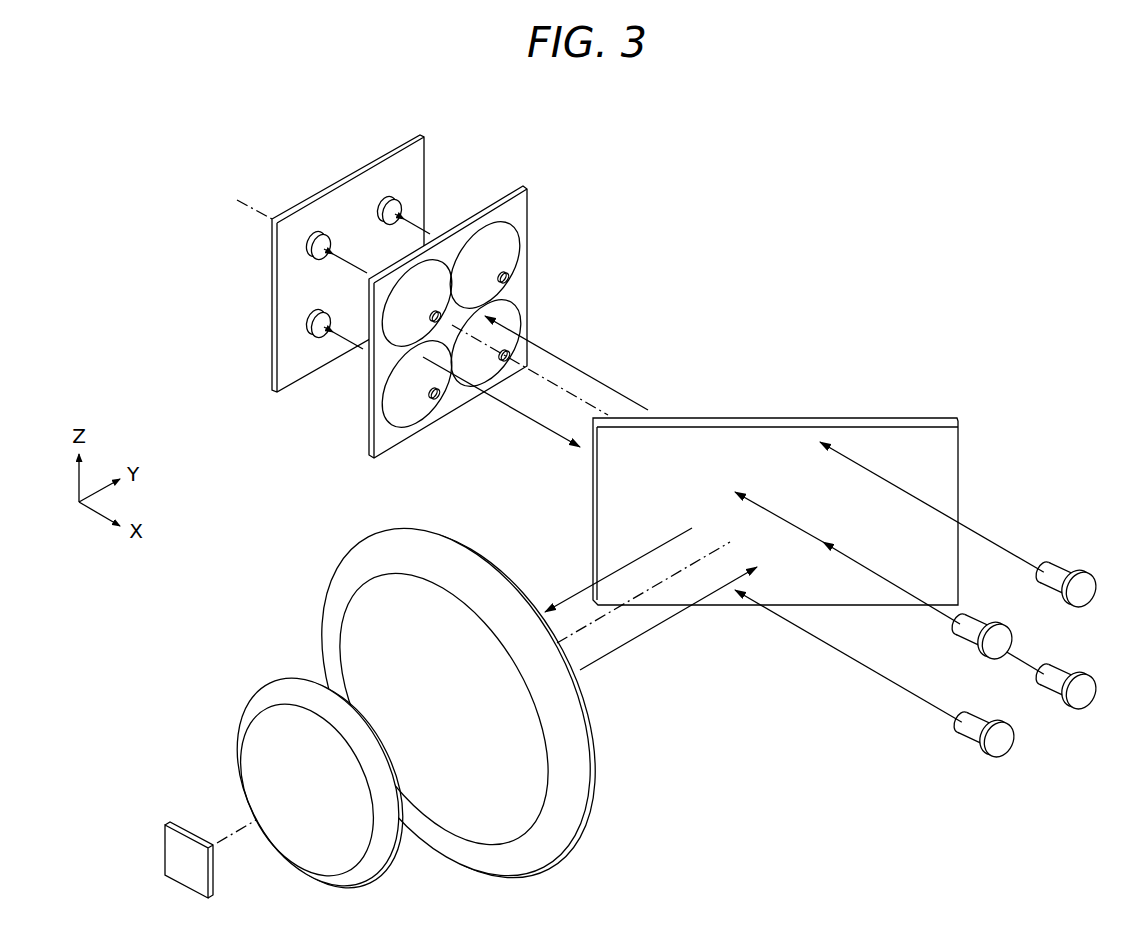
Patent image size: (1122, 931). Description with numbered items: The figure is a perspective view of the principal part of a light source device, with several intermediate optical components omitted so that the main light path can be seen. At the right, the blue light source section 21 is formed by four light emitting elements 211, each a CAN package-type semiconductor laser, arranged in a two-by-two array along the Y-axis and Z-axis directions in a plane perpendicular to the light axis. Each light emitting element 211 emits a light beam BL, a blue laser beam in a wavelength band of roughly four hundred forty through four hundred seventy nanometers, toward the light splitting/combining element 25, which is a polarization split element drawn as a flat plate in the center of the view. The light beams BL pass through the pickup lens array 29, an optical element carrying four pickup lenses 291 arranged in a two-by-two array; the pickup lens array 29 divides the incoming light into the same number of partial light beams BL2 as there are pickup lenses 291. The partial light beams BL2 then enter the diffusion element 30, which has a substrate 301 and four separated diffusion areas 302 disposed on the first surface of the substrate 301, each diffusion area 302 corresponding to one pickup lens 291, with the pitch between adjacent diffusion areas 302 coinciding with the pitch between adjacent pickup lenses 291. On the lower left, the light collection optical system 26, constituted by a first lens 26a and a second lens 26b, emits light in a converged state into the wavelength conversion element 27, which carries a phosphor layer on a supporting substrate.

The blue light source section 21 is at (918, 633).
The light emitting element 211 is at (1058, 685).
The light splitting/combining element 25 is at (904, 440).
The light collection optical system 26 is at (392, 703).
The first lens 26a is at (332, 638).
The second lens 26b is at (309, 782).
The wavelength conversion element 27 is at (172, 862).
The pickup lens array 29 is at (508, 276).
The pickup lens 291 is at (510, 247).
The diffusion element 30 is at (333, 243).
The substrate 301 is at (295, 233).
The diffusion area 302 is at (396, 206).
The light beam BL is at (859, 662).
The partial light beam BL2 is at (342, 343).